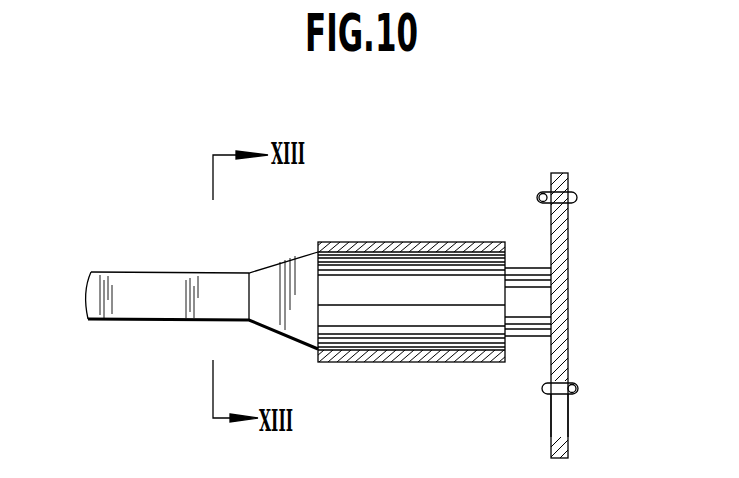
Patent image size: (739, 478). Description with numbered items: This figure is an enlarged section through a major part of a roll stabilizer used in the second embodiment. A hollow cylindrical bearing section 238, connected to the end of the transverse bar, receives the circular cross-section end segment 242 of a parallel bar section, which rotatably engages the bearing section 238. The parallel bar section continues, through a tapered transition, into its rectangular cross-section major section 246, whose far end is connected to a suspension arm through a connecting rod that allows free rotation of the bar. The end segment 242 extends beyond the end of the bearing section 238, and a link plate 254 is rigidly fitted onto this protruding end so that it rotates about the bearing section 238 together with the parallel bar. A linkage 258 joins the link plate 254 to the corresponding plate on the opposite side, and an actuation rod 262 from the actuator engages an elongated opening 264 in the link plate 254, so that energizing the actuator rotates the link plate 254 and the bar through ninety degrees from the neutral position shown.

The hollow cylindrical bearing section 238 is at (370, 246).
The end segment 242 is at (418, 263).
The rectangular cross-section major section 246 is at (168, 272).
The link plate 254 is at (558, 238).
The linkage 258 is at (538, 197).
The actuation rod 262 is at (576, 389).
The elongated opening 264 is at (560, 409).